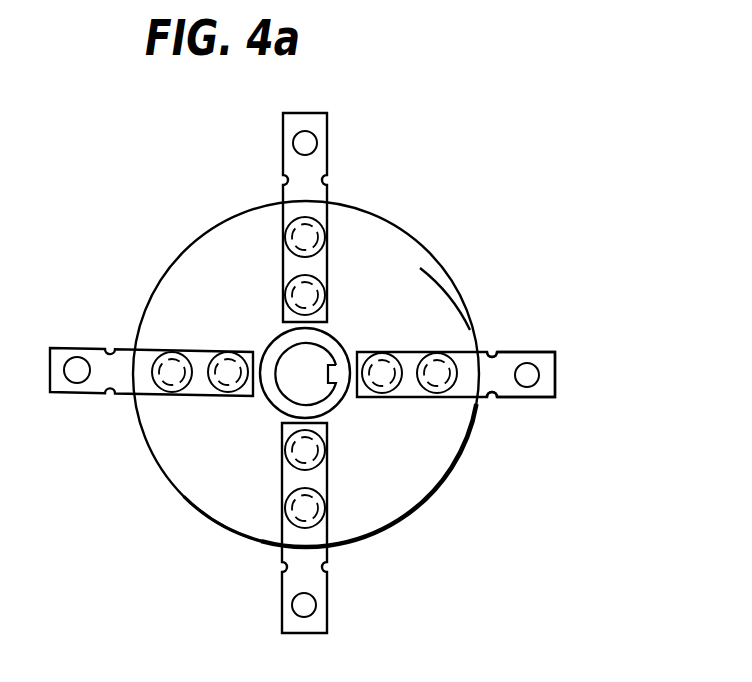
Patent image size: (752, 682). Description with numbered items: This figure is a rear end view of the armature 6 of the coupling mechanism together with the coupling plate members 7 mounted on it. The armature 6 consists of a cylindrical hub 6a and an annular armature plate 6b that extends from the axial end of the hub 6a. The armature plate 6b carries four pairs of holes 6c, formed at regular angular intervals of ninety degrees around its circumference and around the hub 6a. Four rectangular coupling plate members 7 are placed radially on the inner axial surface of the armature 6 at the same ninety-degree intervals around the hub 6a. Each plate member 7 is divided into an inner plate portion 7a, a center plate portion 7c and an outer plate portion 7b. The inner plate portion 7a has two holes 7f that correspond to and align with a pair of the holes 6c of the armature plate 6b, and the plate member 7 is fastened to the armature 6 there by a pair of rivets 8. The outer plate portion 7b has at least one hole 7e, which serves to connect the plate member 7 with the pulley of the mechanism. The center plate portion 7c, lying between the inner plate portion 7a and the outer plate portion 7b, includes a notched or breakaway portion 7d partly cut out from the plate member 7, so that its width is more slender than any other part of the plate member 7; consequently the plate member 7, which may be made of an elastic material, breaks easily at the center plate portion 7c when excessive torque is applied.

The armature 6 is at (196, 226).
The hub 6a is at (327, 348).
The armature plate 6b is at (415, 262).
The holes 6c is at (321, 236).
The coupling plate member 7 is at (332, 128).
The inner plate portion 7a is at (410, 360).
The outer plate portion 7b is at (527, 352).
The center plate portion 7c is at (503, 400).
The notched or breakaway portion 7d is at (492, 400).
The hole 7e is at (532, 398).
The holes 7f is at (440, 400).
The rivets 8 is at (385, 398).